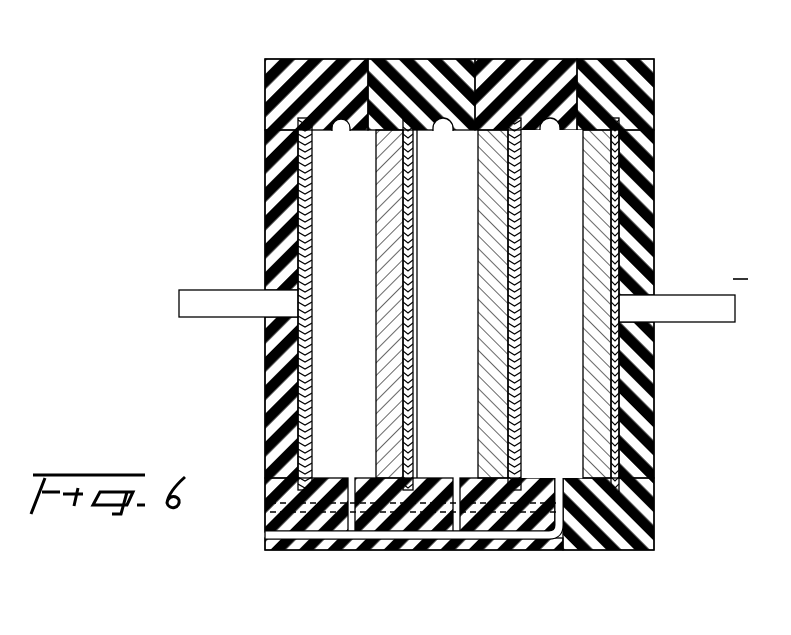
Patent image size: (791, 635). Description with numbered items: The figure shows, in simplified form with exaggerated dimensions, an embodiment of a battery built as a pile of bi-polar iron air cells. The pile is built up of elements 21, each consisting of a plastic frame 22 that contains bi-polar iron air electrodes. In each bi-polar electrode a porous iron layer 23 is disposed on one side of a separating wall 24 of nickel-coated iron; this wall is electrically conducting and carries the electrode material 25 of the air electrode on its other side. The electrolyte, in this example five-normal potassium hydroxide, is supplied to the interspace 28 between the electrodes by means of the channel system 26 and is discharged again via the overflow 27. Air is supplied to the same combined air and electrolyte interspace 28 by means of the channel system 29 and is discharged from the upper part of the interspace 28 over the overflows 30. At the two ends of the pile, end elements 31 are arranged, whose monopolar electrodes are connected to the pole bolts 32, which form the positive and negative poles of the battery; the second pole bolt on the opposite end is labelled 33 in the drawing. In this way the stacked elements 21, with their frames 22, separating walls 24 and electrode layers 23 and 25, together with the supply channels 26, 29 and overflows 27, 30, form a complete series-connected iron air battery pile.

The element 21 is at (565, 52).
The plastic frame 22 is at (480, 176).
The porous iron layer 23 is at (414, 80).
The separating wall 24 is at (393, 188).
The electrode material 25 is at (522, 278).
The channel system 26 is at (418, 550).
The overflow 27 is at (318, 78).
The interspace 28 is at (458, 440).
The channel system 29 is at (390, 550).
The overflow 30 is at (349, 68).
The end element 31 is at (650, 172).
The pole bolt 32 is at (235, 308).
The negative terminal 33 is at (708, 313).